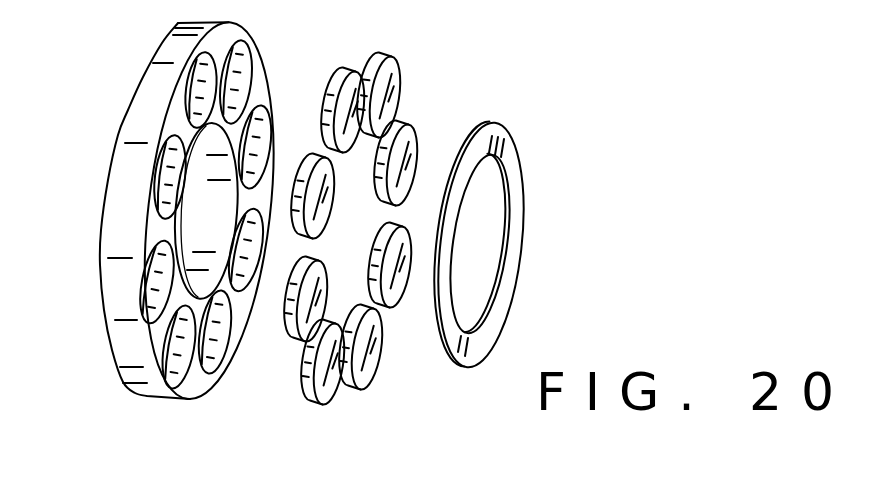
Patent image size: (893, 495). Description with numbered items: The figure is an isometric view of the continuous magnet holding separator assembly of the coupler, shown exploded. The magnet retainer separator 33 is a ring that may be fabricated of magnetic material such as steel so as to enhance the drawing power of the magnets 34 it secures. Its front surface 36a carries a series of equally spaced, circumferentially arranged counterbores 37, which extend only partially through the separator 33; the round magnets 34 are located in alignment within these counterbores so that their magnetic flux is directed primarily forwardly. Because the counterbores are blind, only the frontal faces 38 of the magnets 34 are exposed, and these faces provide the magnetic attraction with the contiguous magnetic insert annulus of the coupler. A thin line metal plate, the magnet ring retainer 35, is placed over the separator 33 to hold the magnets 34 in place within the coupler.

The magnet retainer separator 33 is at (117, 280).
The magnets 34 is at (388, 60).
The magnet ring retainer 35 is at (520, 148).
The front surface 36a is at (257, 78).
The counterbores 37 is at (210, 347).
The frontal faces 38 is at (403, 150).